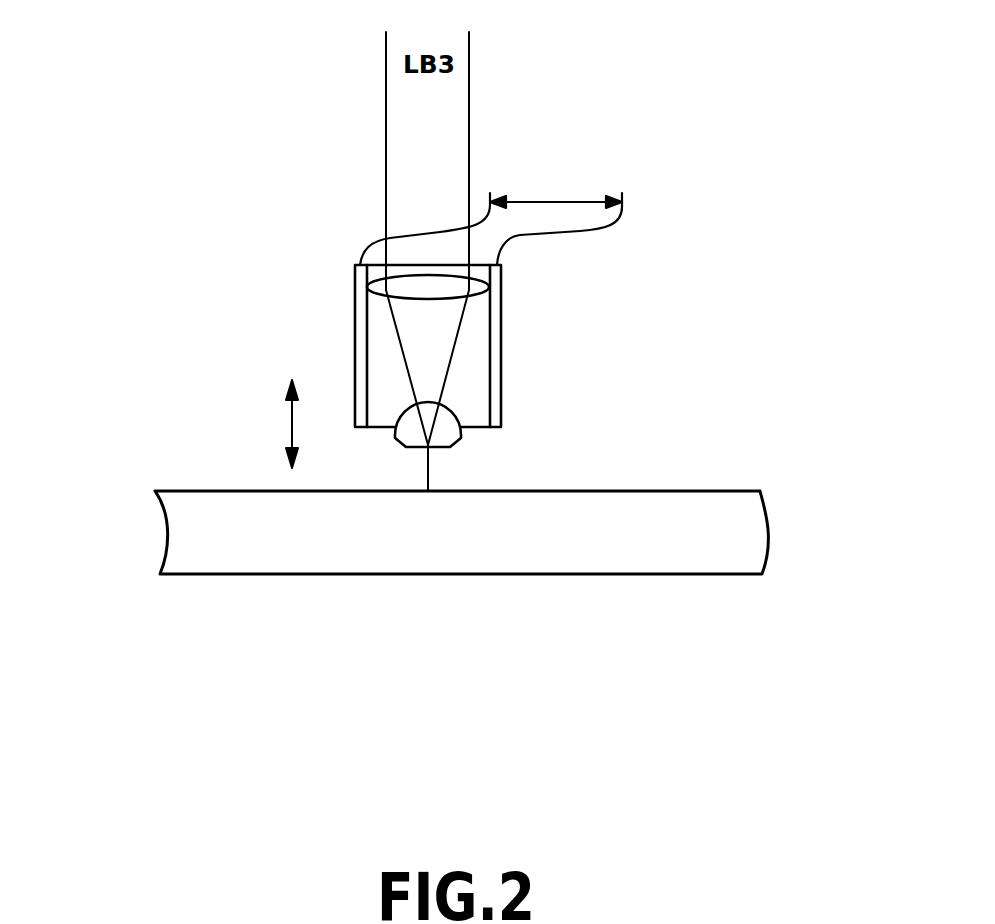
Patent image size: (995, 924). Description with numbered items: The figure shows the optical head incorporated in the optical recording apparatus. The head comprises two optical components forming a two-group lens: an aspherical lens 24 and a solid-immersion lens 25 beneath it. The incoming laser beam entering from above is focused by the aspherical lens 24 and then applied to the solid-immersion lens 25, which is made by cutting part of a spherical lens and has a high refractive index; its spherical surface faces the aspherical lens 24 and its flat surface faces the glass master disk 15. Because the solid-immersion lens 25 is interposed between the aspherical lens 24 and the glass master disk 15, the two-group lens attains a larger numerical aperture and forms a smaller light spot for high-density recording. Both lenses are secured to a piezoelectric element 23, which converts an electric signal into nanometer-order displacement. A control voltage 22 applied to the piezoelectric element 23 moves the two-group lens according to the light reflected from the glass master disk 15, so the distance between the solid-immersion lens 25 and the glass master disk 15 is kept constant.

The glass master disk 15 is at (628, 491).
The control voltage 22 is at (587, 198).
The piezoelectric element 23 is at (355, 345).
The aspherical lens 24 is at (477, 298).
The solid-immersion lens 25 is at (462, 412).